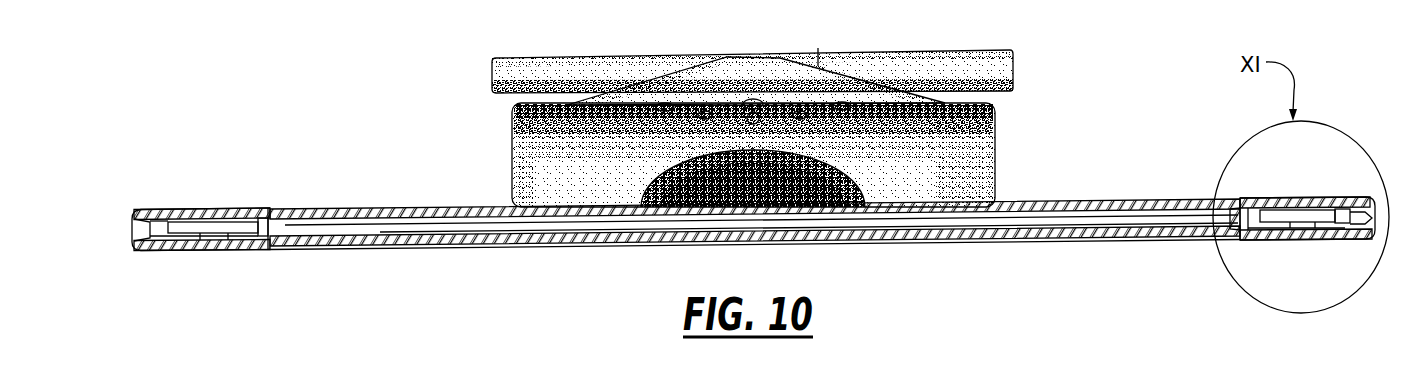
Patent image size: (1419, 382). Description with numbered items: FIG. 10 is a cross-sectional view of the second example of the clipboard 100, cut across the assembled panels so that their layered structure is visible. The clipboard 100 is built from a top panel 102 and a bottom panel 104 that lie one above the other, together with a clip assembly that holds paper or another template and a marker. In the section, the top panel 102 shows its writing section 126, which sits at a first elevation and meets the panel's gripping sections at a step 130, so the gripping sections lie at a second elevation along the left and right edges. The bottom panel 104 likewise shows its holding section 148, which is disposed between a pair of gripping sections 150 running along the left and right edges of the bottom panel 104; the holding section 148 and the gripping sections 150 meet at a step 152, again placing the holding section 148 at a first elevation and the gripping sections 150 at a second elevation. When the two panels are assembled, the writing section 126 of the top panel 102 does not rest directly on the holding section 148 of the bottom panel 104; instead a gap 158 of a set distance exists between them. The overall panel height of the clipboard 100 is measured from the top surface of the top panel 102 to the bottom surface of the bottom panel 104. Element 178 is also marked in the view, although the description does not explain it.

The clipboard 100 is at (327, 158).
The top panel 102 is at (333, 212).
The bottom panel 104 is at (330, 249).
The writing section 126 is at (1031, 205).
The holding section 148 is at (1060, 243).
The gap 158 is at (283, 229).
The step 130 is at (1240, 198).
The step 152 is at (1245, 242).
The distal cavity insert 178 is at (1315, 197).
The gripping sections 150 is at (1320, 243).